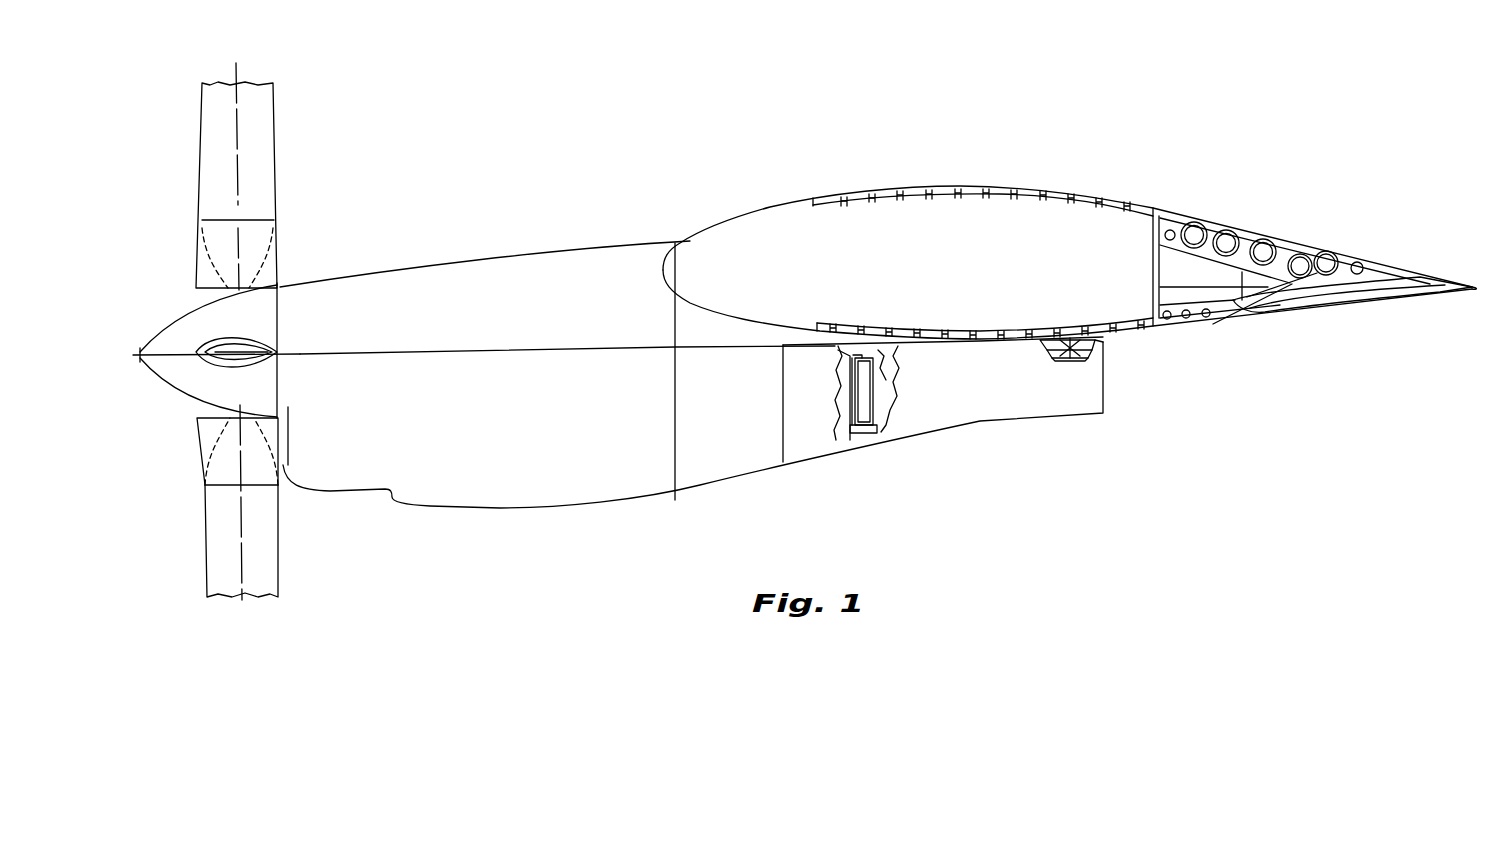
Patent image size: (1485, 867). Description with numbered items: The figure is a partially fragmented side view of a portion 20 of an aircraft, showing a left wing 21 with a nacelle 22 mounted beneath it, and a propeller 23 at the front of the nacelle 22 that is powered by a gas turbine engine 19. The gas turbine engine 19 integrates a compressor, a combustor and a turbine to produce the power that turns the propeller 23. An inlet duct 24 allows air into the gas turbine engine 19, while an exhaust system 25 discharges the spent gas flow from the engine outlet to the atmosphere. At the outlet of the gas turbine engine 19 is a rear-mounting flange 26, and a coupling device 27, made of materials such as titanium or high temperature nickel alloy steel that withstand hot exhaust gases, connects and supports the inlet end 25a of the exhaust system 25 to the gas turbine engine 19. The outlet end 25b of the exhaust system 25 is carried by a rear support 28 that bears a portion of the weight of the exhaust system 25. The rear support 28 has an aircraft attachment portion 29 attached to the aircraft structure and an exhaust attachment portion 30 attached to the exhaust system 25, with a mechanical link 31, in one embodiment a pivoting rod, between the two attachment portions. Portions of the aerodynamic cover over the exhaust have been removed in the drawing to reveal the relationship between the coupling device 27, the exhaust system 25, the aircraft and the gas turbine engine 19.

The gas turbine engine 19 is at (845, 388).
The portion of an aircraft 20 is at (1255, 133).
The left wing 21 is at (1068, 192).
The nacelle 22 is at (697, 450).
The propeller 23 is at (217, 168).
The inlet duct 24 is at (288, 468).
The exhaust system 25 is at (890, 348).
The inlet end of the exhaust system 25a is at (878, 433).
The outlet end of the exhaust system 25b is at (1092, 355).
The rear-mounting flange 26 is at (857, 433).
The coupling device 27 is at (862, 333).
The rear support 28 is at (1088, 336).
The aircraft attachment portion 29 is at (1065, 336).
The exhaust attachment portion 30 is at (1075, 358).
The mechanical link 31 is at (1067, 352).